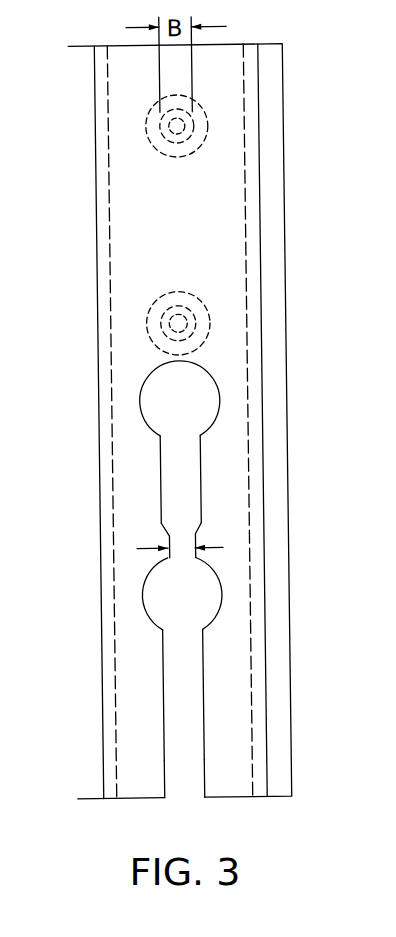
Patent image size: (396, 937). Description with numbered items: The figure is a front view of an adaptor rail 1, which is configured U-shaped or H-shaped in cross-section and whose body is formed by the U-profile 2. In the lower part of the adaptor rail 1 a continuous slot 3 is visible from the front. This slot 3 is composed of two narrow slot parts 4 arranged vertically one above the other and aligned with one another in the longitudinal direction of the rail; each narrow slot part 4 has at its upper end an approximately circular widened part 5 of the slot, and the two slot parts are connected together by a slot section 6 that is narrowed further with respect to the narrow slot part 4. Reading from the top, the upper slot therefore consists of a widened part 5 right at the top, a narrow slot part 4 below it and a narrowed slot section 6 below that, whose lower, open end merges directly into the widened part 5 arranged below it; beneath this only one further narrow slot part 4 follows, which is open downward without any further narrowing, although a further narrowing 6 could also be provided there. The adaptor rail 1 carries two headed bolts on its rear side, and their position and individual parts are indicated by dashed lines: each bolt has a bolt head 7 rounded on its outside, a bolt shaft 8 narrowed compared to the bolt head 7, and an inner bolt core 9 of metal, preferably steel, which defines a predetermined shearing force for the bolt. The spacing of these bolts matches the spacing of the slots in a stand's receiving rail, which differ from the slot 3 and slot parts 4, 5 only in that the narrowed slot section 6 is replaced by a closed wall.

The adaptor rail 1 is at (306, 113).
The U-profile 2 is at (121, 172).
The slot 3 is at (180, 790).
The narrow slot part 4 is at (201, 485).
The widened part of the slot 5 is at (157, 433).
The narrowed slot section 6 is at (194, 540).
The bolt head 7 is at (180, 292).
The bolt shaft 8 is at (189, 335).
The bolt core 9 is at (173, 321).